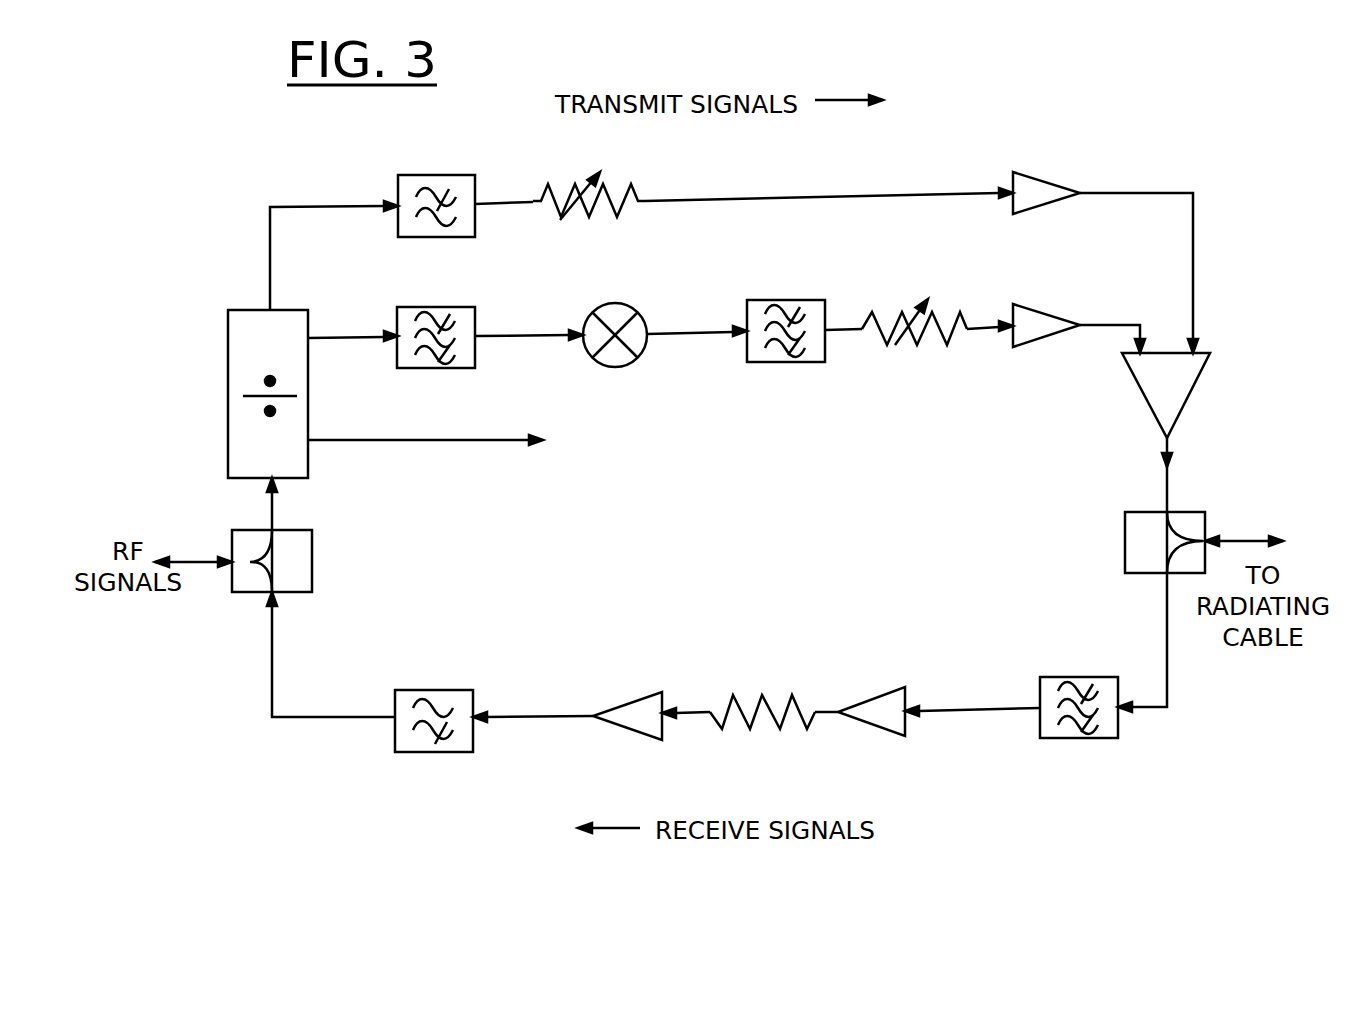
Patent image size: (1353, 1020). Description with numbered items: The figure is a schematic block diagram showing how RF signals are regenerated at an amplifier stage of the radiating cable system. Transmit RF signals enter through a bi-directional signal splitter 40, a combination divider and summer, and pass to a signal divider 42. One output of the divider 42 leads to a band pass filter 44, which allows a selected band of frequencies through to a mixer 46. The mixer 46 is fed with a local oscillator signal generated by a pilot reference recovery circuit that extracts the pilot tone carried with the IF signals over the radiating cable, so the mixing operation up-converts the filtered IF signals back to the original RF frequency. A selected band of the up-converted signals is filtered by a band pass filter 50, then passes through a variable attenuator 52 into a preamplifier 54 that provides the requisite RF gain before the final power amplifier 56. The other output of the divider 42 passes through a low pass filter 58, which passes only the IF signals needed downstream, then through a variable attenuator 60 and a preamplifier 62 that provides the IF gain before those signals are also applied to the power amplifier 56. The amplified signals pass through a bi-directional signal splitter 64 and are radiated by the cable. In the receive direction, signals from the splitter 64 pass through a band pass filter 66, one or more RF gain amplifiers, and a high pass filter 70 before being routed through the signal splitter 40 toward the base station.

The bi-directional signal splitter 40 is at (295, 530).
The signal divider 42 is at (245, 308).
The band pass filter 44 is at (476, 322).
The mixer 46 is at (615, 303).
The band pass filter 50 is at (747, 311).
The variable attenuator 52 is at (926, 348).
The preamplifier 54 is at (1062, 318).
The final power amplifier 56 is at (1172, 427).
The low pass filter 58 is at (393, 182).
The variable attenuator 60 is at (613, 190).
The preamplifier 62 is at (1013, 182).
The bi-directional signal splitter 64 is at (1125, 531).
The band pass filter 66 is at (1062, 677).
The high pass filter 70 is at (430, 689).